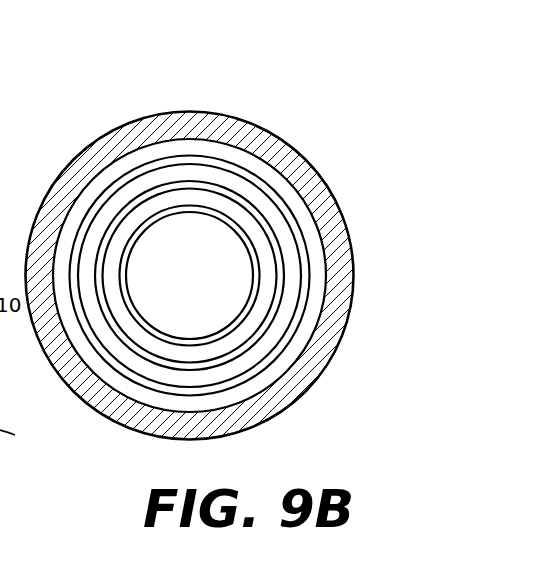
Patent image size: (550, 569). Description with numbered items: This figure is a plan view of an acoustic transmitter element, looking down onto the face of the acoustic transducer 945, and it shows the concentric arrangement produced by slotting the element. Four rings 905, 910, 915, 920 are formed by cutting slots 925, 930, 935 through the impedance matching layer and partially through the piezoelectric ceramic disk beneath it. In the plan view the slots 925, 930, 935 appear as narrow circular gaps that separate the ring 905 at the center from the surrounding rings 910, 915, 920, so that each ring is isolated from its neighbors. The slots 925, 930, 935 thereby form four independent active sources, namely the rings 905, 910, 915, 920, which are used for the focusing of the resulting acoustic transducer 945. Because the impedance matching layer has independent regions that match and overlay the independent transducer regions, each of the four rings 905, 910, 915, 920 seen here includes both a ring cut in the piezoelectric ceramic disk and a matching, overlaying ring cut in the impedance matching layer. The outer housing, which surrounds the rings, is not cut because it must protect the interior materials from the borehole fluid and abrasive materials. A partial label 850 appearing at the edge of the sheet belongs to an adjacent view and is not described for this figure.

The acoustic transducer 945 is at (156, 79).
The ring 905 is at (188, 297).
The slot 925 is at (137, 233).
The ring 910 is at (262, 295).
The slot 930 is at (160, 187).
The ring 915 is at (260, 193).
The slot 935 is at (187, 157).
The ring 920 is at (237, 155).
The adjacent component 850 is at (2, 395).